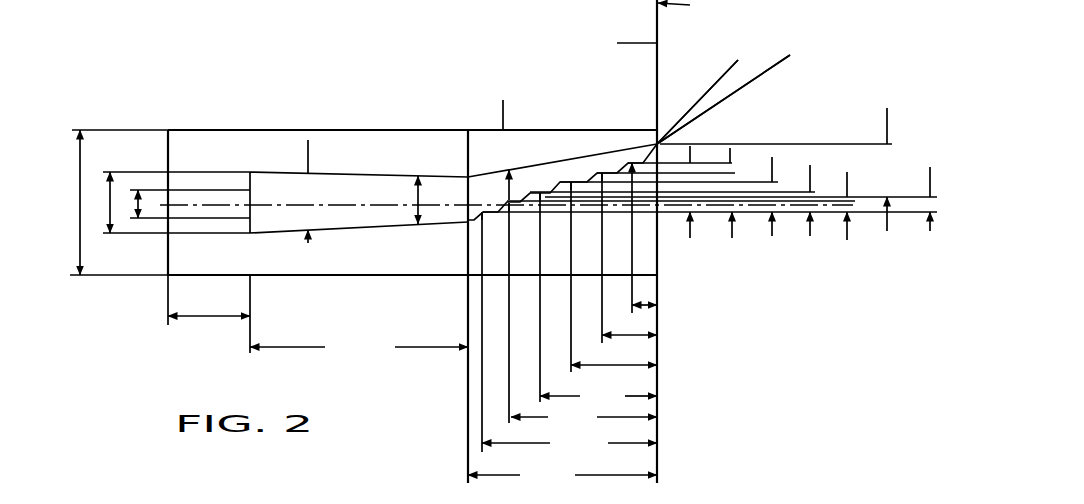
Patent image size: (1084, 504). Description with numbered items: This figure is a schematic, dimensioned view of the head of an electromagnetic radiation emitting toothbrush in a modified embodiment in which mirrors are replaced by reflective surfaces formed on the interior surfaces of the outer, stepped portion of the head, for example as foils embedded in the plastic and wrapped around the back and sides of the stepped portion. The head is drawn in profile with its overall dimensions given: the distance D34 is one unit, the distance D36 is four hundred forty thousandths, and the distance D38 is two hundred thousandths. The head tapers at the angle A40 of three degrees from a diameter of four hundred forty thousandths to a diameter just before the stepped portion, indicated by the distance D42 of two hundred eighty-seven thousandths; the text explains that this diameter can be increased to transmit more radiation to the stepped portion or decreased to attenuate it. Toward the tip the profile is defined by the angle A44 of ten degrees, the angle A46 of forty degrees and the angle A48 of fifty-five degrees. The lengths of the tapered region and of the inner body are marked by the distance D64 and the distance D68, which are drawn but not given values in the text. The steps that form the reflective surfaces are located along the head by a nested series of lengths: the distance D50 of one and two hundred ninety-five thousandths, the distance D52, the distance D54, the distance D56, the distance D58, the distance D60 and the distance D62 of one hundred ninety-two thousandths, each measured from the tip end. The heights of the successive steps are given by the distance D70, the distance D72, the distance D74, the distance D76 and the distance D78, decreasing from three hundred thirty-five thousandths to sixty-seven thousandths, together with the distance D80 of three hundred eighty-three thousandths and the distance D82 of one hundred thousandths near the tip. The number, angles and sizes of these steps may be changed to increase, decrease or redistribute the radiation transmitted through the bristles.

The distance D34 is at (86, 232).
The distance D36 is at (107, 200).
The distance D38 is at (135, 200).
The angle A40 is at (307, 191).
The distance D42 is at (417, 204).
The angle A44 is at (512, 169).
The angle A46 is at (753, 90).
The angle A48 is at (778, 59).
The distance D50 is at (562, 479).
The distance D52 is at (569, 449).
The distance D54 is at (584, 419).
The distance D56 is at (598, 395).
The distance D58 is at (630, 367).
The distance D60 is at (633, 337).
The distance D62 is at (647, 307).
The tapered section length dimension D64 is at (359, 354).
The inner body length dimension D68 is at (209, 314).
The distance D70 is at (691, 236).
The distance D72 is at (750, 135).
The distance D74 is at (772, 236).
The distance D76 is at (830, 132).
The distance D78 is at (847, 240).
The distance D80 is at (897, 107).
The distance D82 is at (930, 231).